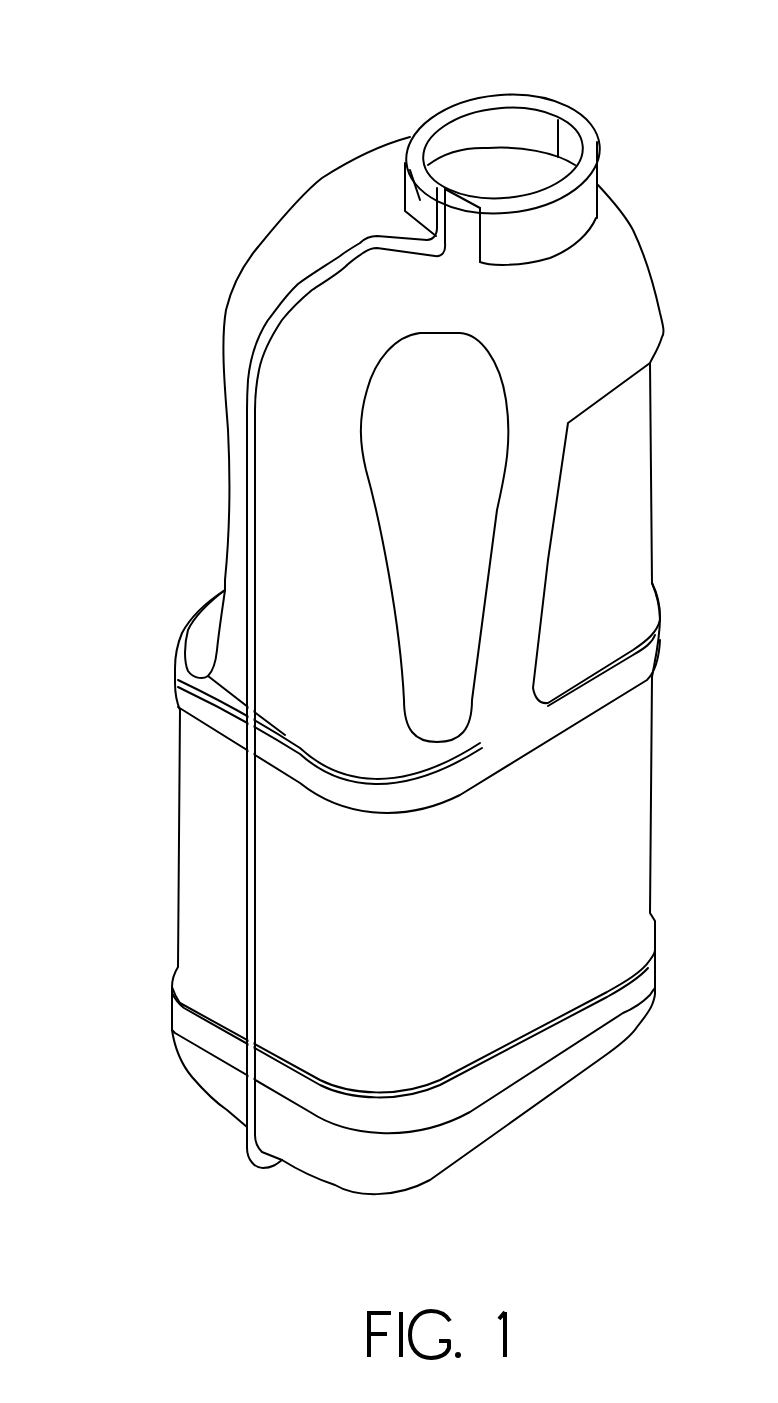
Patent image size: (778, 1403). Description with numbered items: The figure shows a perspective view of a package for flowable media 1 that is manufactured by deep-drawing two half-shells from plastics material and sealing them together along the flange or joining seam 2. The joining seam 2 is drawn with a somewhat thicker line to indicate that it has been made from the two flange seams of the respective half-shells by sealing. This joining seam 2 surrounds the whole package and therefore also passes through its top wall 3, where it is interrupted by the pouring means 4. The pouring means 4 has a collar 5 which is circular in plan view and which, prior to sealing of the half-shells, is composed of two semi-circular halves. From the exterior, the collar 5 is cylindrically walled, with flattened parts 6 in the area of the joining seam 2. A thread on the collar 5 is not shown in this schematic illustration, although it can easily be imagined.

The package for flowable media 1 is at (367, 612).
The joining seam 2 is at (247, 510).
The top wall 3 is at (424, 439).
The pouring means 4 is at (590, 132).
The collar 5 is at (487, 110).
The flattened parts 6 is at (547, 108).